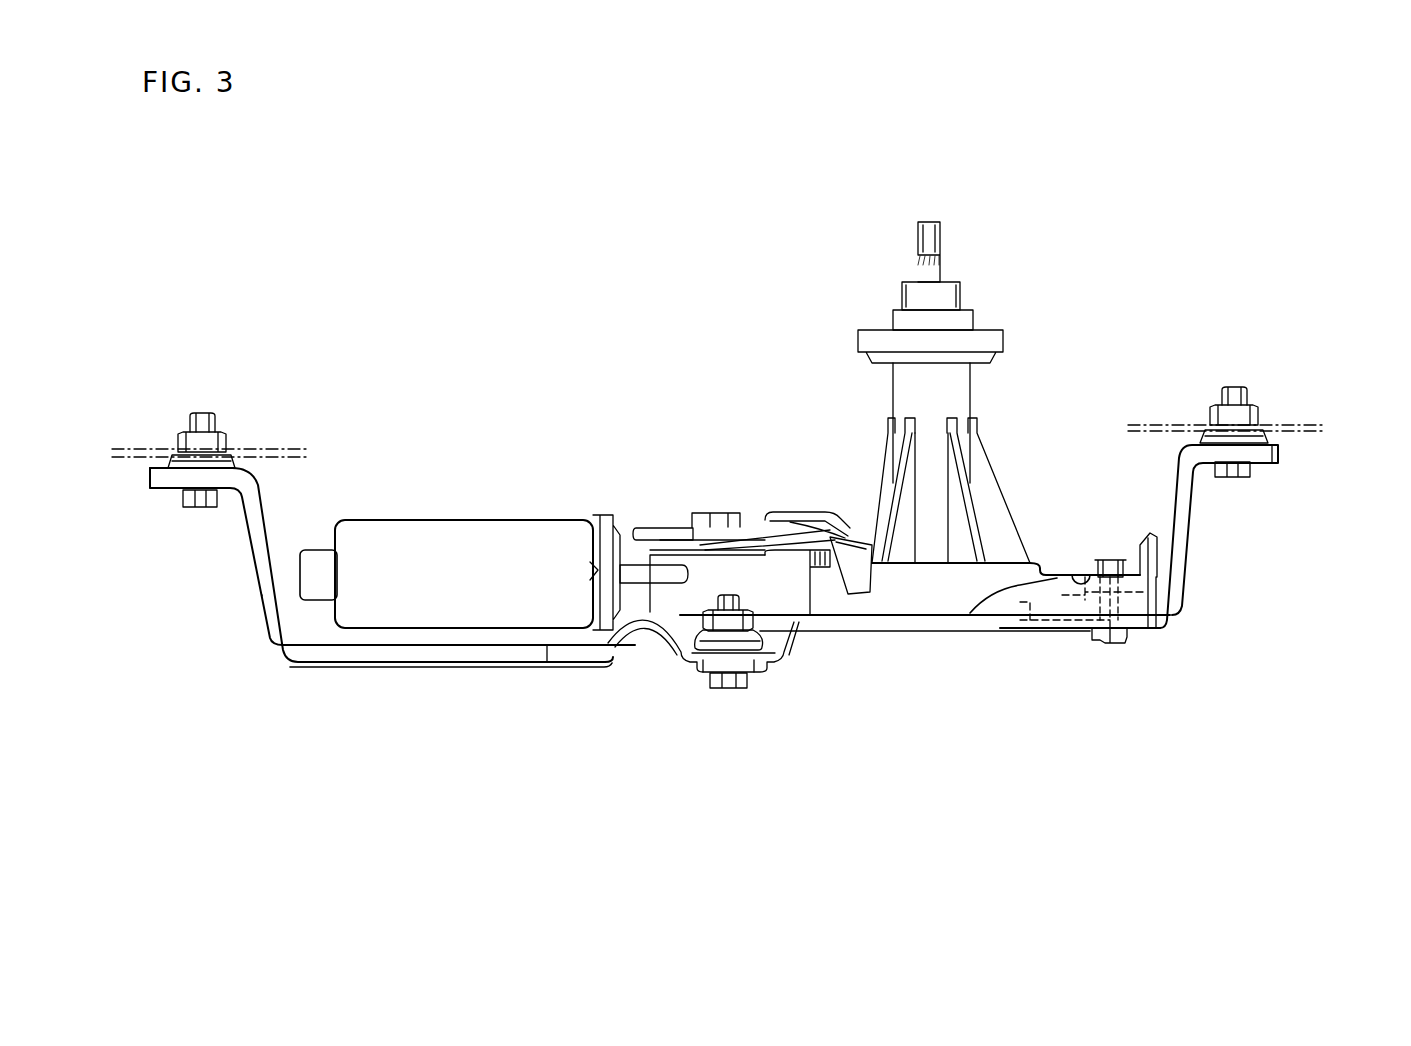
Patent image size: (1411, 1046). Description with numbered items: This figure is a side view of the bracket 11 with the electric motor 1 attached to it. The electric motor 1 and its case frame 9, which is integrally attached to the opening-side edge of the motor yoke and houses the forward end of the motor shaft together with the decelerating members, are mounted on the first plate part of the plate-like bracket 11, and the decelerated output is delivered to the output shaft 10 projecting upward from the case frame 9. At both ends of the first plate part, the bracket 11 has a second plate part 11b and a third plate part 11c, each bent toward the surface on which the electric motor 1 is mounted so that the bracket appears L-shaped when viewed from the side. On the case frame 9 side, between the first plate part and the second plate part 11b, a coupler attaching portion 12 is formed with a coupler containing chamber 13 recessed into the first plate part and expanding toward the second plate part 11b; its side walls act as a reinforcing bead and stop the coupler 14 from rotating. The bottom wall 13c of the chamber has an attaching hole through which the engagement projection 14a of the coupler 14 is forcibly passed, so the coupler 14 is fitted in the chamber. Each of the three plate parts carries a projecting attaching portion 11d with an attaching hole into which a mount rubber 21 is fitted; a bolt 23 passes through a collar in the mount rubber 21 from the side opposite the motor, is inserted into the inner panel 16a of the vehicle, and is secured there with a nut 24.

The electric motor 1 is at (497, 538).
The case frame 9 is at (905, 592).
The output shaft 10 is at (930, 240).
The bracket 11 is at (455, 668).
The second plate part 11b is at (1172, 558).
The third plate part 11c is at (265, 598).
The attaching portion 11d is at (165, 490).
The coupler attaching portion 12 is at (1061, 605).
The coupler containing chamber 13 is at (1155, 616).
The bottom wall 13c is at (1078, 585).
The coupler 14 is at (1110, 615).
The engagement projection 14a is at (1113, 560).
The inner panel 16a is at (300, 452).
The mount rubber 21 is at (230, 463).
The bolt 23 is at (203, 413).
The nut 24 is at (200, 440).